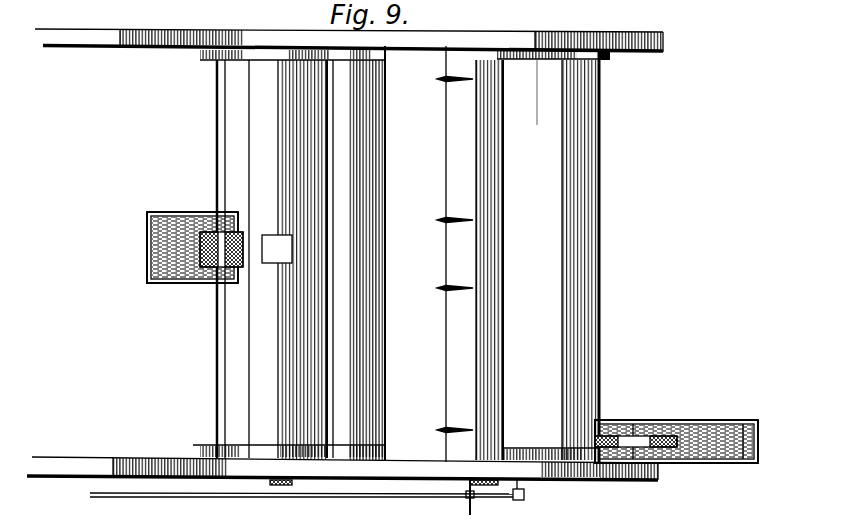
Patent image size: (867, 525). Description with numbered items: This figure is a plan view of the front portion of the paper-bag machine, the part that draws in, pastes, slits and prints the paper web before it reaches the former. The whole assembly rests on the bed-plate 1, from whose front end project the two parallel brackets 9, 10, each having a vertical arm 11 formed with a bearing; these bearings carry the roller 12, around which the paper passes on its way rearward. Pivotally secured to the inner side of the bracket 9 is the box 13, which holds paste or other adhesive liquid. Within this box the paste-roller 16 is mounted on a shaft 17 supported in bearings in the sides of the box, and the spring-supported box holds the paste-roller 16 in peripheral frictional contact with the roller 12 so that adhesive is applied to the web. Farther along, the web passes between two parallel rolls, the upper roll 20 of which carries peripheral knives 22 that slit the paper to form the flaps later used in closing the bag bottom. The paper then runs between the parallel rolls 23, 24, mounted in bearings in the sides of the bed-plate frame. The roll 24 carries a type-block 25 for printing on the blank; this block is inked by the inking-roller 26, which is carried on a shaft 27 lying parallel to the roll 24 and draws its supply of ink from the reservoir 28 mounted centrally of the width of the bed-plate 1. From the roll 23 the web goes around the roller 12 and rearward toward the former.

The bed-plate 1 is at (58, 478).
The bracket 9 is at (401, 472).
The bracket 10 is at (210, 38).
The vertical arm 11 is at (549, 42).
The roller 12 is at (567, 265).
The box 13 is at (734, 459).
The paste-roller 16 is at (665, 451).
The shaft 17 is at (620, 468).
The upper roll 20 is at (468, 48).
The peripheral knives 22 is at (445, 83).
The roll 23 is at (337, 392).
The roll 24 is at (277, 312).
The type-block 25 is at (273, 262).
The inking-roller 26 is at (212, 253).
The shaft 27 is at (216, 383).
The reservoir 28 is at (147, 248).